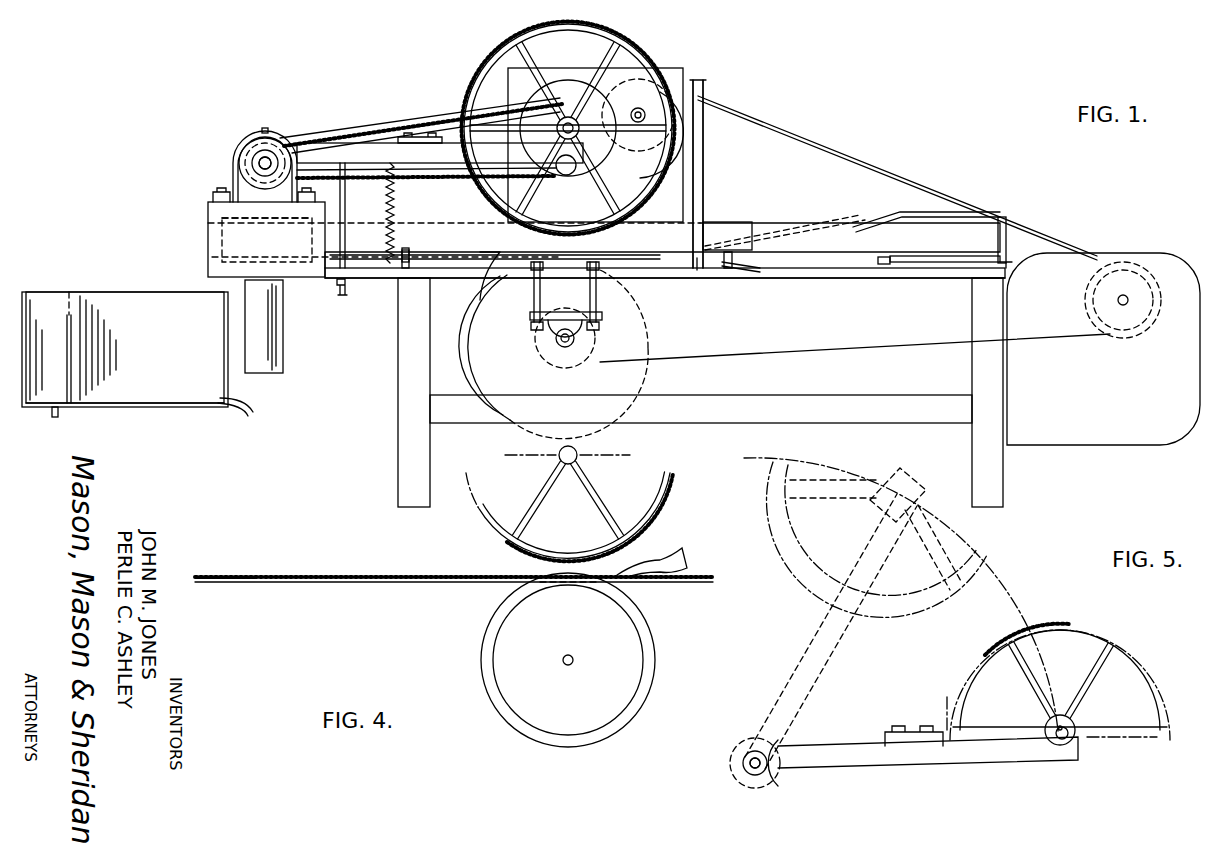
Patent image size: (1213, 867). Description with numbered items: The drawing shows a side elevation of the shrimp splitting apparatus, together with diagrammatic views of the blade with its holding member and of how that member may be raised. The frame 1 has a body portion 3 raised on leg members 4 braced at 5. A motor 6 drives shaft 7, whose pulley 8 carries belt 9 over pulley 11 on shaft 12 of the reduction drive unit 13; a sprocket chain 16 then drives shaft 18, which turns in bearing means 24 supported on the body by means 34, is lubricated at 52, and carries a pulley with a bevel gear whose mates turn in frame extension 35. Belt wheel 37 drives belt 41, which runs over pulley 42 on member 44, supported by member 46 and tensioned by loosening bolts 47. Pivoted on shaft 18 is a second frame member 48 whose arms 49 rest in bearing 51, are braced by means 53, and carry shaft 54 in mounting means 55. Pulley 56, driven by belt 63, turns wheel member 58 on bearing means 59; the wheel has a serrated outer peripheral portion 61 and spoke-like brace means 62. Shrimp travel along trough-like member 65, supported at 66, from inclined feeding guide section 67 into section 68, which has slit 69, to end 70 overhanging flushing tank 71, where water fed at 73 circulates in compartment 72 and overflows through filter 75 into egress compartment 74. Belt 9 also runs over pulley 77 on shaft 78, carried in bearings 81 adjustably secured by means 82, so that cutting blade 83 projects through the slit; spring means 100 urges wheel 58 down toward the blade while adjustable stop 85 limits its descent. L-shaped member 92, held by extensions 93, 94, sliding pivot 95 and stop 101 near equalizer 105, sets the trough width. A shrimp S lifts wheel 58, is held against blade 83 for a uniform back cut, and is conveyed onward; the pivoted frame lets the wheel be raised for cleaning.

In FIG. 1, the frame 1 is at (823, 281).
In FIG. 1, the body portion 3 is at (850, 280).
In FIG. 1, the leg members 4 is at (427, 387).
In FIG. 1, the brace 5 is at (898, 422).
In FIG. 1, the motor 6 is at (1132, 438).
In FIG. 1, the shaft 7 is at (1156, 306).
In FIG. 1, the pulley 8 is at (1130, 336).
In FIG. 1, the belt 9 is at (870, 165).
In FIG. 1, the pulley 11 is at (633, 145).
In FIG. 1, the shaft 12 is at (638, 108).
In FIG. 1, the reduction drive unit 13 is at (693, 85).
In FIG. 1, the sprocket chain 16 is at (362, 123).
In FIG. 1, the shaft 18 is at (255, 160).
In FIG. 5, the shaft 18 is at (745, 762).
In FIG. 1, the bearing means 24 is at (250, 138).
In FIG. 1, the bearing support means 34 is at (208, 242).
In FIG. 1, the frame extension 35 is at (272, 336).
In FIG. 1, the belt wheel 37 is at (210, 216).
In FIG. 1, the belt 41 is at (782, 230).
In FIG. 1, the pulley 42 is at (1004, 220).
In FIG. 1, the member 44 is at (1008, 268).
In FIG. 1, the member 46 is at (932, 263).
In FIG. 1, the bolts 47 is at (886, 265).
In FIG. 5, the second frame member 48 is at (822, 665).
In FIG. 1, the arms 49 is at (322, 150).
In FIG. 1, the bearing 51 is at (262, 164).
In FIG. 5, the bearing 51 is at (742, 748).
In FIG. 1, the lubrication means 52 is at (269, 130).
In FIG. 1, the bracing means 53 is at (432, 136).
In FIG. 5, the bracing means 53 is at (906, 734).
In FIG. 1, the shaft 54 is at (560, 127).
In FIG. 4, the shaft 54 is at (560, 458).
In FIG. 5, the shaft 54 is at (1076, 728).
In FIG. 1, the mounting means 55 is at (560, 176).
In FIG. 1, the pulley 56 is at (580, 85).
In FIG. 1, the wheel member 58 is at (643, 38).
In FIG. 4, the wheel member 58 is at (536, 548).
In FIG. 5, the wheel member 58 is at (1110, 630).
In FIG. 5, the bearing means 59 is at (1046, 728).
In FIG. 1, the outer peripheral portion 61 is at (510, 34).
In FIG. 4, the outer peripheral portion 61 is at (668, 518).
In FIG. 5, the outer peripheral portion 61 is at (1035, 622).
In FIG. 1, the spoke-like brace means 62 is at (525, 72).
In FIG. 4, the spoke-like brace means 62 is at (610, 518).
In FIG. 5, the spoke-like brace means 62 is at (1090, 678).
In FIG. 1, the belt 63 is at (398, 110).
In FIG. 1, the trough-like member 65 is at (912, 214).
In FIG. 1, the support means 66 is at (347, 278).
In FIG. 1, the feeding guide section 67 is at (838, 223).
In FIG. 1, the trough section 68 is at (660, 260).
In FIG. 4, the trough section 68 is at (380, 577).
In FIG. 4, the slit 69 is at (520, 584).
In FIG. 1, the trough end 70 is at (208, 258).
In FIG. 1, the flushing tank 71 is at (142, 412).
In FIG. 1, the compartment 72 is at (160, 392).
In FIG. 1, the water inlet 73 is at (242, 410).
In FIG. 1, the egress compartment 74 is at (50, 410).
In FIG. 1, the filter 75 is at (69, 294).
In FIG. 1, the pulley 77 is at (556, 366).
In FIG. 1, the shaft 78 is at (574, 338).
In FIG. 4, the shaft 78 is at (574, 656).
In FIG. 1, the bearings 81 is at (556, 342).
In FIG. 1, the adjusting means 82 is at (533, 296).
In FIG. 1, the cutting or splitting blade 83 is at (480, 345).
In FIG. 4, the cutting or splitting blade 83 is at (545, 660).
In FIG. 1, the adjustable stop 85 is at (346, 214).
In FIG. 1, the L-shaped member 92 is at (730, 226).
In FIG. 1, the extension 93 is at (410, 250).
In FIG. 1, the extension 94 is at (728, 272).
In FIG. 1, the sliding pivot 95 is at (500, 268).
In FIG. 1, the spring means 100 is at (394, 198).
In FIG. 1, the stop means 101 is at (406, 268).
In FIG. 1, the equalizer 105 is at (710, 191).
In FIG. 4, the fish S is at (650, 558).